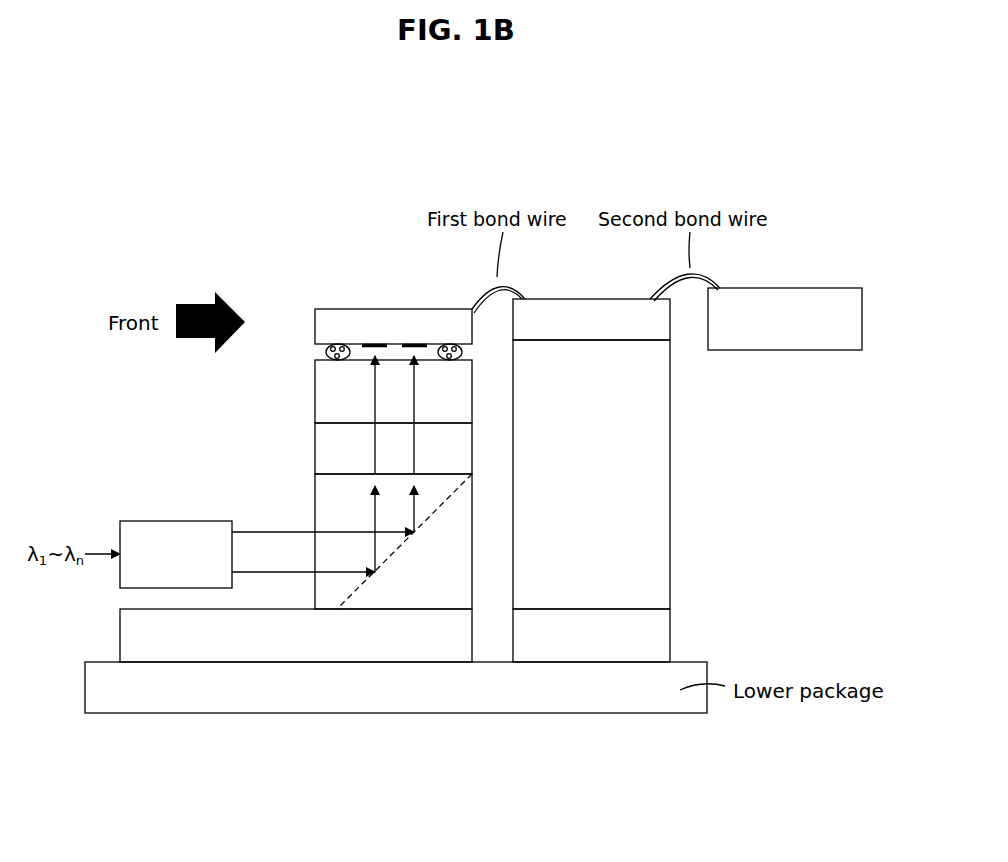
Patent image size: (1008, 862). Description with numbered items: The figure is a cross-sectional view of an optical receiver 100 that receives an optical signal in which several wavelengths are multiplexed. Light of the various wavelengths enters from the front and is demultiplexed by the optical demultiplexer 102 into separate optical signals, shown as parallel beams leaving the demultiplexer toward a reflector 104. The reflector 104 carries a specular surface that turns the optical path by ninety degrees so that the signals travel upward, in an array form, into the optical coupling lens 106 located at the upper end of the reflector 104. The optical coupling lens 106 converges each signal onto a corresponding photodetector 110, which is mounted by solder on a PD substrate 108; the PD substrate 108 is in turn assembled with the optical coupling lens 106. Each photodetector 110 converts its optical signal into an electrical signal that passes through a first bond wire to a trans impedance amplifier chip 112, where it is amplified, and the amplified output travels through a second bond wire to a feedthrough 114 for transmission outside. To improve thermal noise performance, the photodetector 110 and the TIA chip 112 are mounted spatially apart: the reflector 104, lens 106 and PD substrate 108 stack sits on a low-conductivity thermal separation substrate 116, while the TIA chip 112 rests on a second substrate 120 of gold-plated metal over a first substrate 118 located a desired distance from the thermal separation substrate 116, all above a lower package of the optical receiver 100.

The optical receiver 100 is at (475, 116).
The optical demultiplexer 102 is at (180, 521).
The reflector 104 is at (435, 590).
The optical coupling lens 106 is at (318, 446).
The PD substrate 108 is at (318, 388).
The photodetector (PD) 110 is at (395, 309).
The trans impedance amplifier (TIA) chip 112 is at (590, 299).
The feedthrough 114 is at (785, 288).
The thermal separation substrate 116 is at (140, 641).
The first substrate 118 is at (657, 642).
The second substrate 120 is at (658, 480).